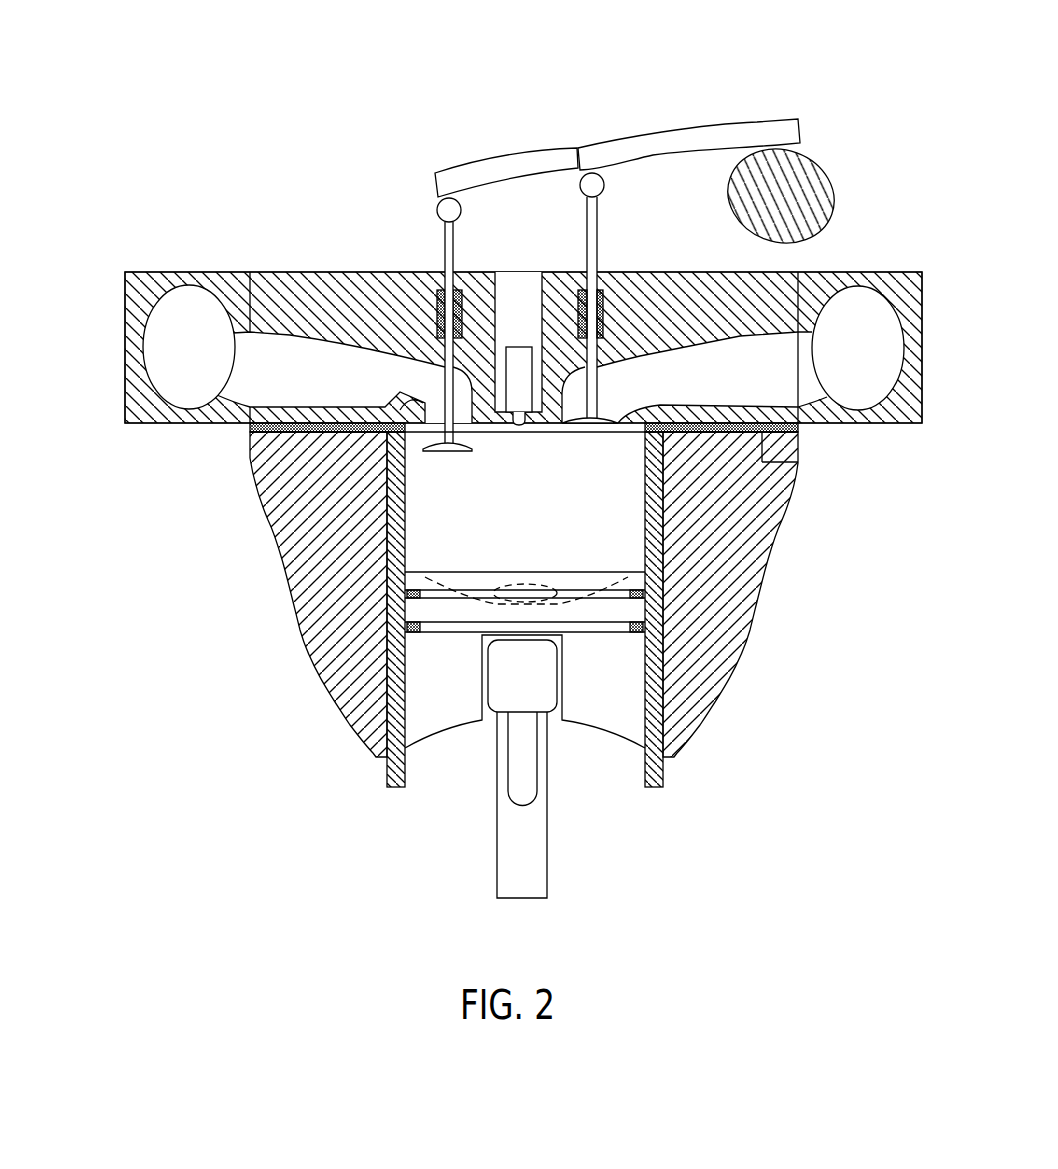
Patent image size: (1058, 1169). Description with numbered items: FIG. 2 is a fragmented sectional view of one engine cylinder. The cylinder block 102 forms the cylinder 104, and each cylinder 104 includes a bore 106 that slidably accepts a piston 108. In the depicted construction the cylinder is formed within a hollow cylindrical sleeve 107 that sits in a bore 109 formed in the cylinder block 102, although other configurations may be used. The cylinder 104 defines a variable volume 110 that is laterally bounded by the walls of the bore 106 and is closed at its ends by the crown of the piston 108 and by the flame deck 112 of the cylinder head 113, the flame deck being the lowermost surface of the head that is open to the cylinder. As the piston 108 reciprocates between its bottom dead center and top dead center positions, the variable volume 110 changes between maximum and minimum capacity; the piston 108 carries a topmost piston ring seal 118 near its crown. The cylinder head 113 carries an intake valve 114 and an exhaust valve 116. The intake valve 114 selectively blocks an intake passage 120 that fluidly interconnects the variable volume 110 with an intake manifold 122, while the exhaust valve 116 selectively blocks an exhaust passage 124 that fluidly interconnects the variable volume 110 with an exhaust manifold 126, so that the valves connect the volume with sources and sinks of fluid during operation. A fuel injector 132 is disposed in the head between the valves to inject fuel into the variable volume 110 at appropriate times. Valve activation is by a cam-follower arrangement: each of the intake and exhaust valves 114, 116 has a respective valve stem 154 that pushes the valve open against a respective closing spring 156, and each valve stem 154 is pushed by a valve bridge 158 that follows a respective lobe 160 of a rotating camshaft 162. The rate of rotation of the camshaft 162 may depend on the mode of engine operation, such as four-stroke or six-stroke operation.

The cylinder block 102 is at (541, 599).
The engine cylinder 104 is at (297, 742).
The bore 106 is at (606, 609).
The hollow cylindrical sleeve 107 is at (662, 680).
The piston 108 is at (605, 710).
The bore 109 is at (663, 733).
The variable volume 110 is at (500, 545).
The flame deck 112 is at (486, 434).
The cylinder head 113 is at (725, 290).
The intake valve 114 is at (418, 400).
The exhaust valve 116 is at (618, 298).
The topmost piston ring seal 118 is at (645, 591).
The intake passage 120 is at (277, 360).
The intake manifold 122 is at (160, 347).
The exhaust passage 124 is at (767, 382).
The exhaust manifold 126 is at (858, 315).
The fuel injector 132 is at (523, 357).
The valve stem 154 is at (598, 248).
The closing spring 156 is at (603, 320).
The valve bridge 158 is at (460, 180).
The lobe 160 is at (793, 182).
The camshaft 162 is at (853, 88).